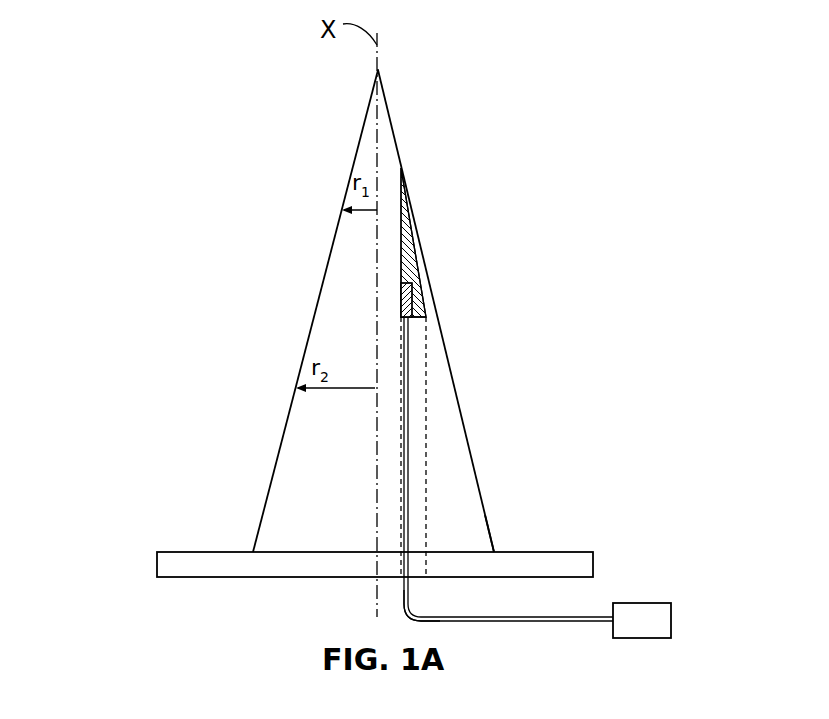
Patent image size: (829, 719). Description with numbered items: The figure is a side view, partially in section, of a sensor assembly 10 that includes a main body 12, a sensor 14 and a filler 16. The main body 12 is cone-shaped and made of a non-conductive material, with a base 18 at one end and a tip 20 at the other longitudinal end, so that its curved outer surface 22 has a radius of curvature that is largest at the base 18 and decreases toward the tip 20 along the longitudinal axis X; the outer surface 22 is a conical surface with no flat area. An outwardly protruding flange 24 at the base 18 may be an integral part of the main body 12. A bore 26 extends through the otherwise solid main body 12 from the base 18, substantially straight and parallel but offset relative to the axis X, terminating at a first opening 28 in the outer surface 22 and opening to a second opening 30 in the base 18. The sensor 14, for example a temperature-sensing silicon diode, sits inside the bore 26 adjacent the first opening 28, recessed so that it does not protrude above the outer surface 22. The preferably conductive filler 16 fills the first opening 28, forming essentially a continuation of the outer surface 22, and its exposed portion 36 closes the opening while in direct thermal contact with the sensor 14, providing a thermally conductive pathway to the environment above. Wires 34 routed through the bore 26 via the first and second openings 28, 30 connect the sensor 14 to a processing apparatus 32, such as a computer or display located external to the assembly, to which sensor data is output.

The sensor assembly 10 is at (131, 42).
The main body 12 is at (310, 322).
The sensor 14 is at (402, 308).
The filler 16 is at (420, 262).
The base 18 is at (483, 551).
The tip 20 is at (378, 70).
The outer surface 22 is at (313, 429).
The flange 24 is at (575, 551).
The bore 26 is at (417, 432).
The first opening 28 is at (422, 184).
The second opening 30 is at (423, 583).
The processing apparatus 32 is at (642, 620).
The wires 34 is at (537, 623).
The exposed portion 36 is at (417, 227).